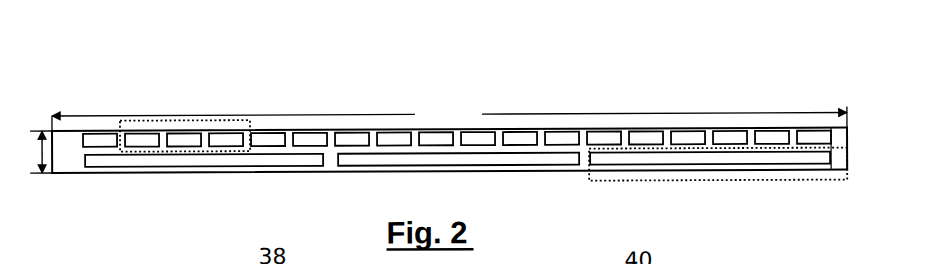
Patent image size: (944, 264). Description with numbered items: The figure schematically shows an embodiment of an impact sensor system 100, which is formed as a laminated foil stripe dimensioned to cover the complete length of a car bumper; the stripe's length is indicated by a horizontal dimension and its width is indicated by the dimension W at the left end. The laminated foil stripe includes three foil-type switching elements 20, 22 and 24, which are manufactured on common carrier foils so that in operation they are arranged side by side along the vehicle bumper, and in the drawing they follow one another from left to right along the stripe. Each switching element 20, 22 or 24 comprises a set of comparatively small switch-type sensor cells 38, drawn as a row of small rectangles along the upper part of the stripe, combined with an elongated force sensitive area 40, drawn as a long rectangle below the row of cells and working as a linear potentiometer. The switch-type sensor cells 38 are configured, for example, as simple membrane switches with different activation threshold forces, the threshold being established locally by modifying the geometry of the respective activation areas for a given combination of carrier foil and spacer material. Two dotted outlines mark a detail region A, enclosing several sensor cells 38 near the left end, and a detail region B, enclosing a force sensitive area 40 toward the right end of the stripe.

The impact sensor system 100 is at (594, 72).
The foil-type switching element 20 is at (199, 90).
The foil-type switching element 22 is at (458, 98).
The foil-type switching element 24 is at (733, 98).
The switch-type sensor cells 38 is at (175, 128).
The force sensitive area 40 is at (158, 162).
The detail region A is at (242, 126).
The detail region B is at (752, 184).
The width W is at (34, 152).